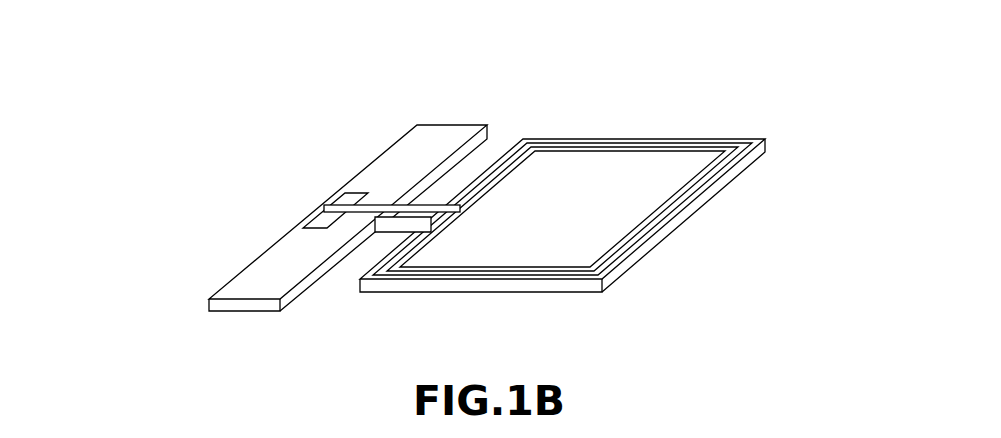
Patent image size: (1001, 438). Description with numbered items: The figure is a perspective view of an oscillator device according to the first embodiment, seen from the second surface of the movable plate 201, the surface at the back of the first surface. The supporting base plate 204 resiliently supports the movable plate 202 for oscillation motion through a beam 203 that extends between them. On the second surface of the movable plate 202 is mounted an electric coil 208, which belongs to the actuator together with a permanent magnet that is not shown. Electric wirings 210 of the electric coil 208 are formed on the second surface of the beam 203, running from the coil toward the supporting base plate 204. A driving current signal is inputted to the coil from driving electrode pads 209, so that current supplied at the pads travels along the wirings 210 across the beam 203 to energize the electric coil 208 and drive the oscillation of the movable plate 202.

The movable plate 201 is at (527, 117).
The movable plate 202 is at (668, 175).
The beam 203 is at (400, 218).
The supporting base plate 204 is at (250, 281).
The electric coil 208 is at (589, 140).
The driving electrode pads 209 is at (328, 228).
The electric wirings 210 is at (382, 206).